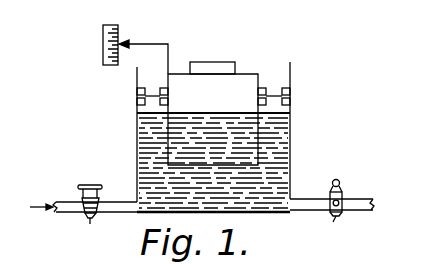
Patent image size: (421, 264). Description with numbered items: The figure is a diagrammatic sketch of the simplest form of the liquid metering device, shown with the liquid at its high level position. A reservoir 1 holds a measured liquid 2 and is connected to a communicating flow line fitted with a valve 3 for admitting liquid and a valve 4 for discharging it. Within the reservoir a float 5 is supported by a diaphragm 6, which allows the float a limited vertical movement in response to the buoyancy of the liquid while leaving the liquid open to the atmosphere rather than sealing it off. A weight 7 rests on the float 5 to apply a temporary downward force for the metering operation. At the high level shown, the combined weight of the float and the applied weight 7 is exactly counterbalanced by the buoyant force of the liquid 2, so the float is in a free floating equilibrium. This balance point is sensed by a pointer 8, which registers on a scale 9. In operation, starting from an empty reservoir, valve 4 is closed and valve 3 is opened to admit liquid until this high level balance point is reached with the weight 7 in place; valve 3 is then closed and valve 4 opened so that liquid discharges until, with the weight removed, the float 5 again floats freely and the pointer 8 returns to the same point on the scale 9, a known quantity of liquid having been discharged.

The reservoir 1 is at (137, 156).
The liquid 2 is at (213, 160).
The valve 3 is at (90, 224).
The valve 4 is at (333, 222).
The float 5 is at (213, 119).
The diaphragm 6 is at (277, 90).
The weight 7 is at (214, 62).
The pointer 8 is at (167, 44).
The scale 9 is at (119, 38).